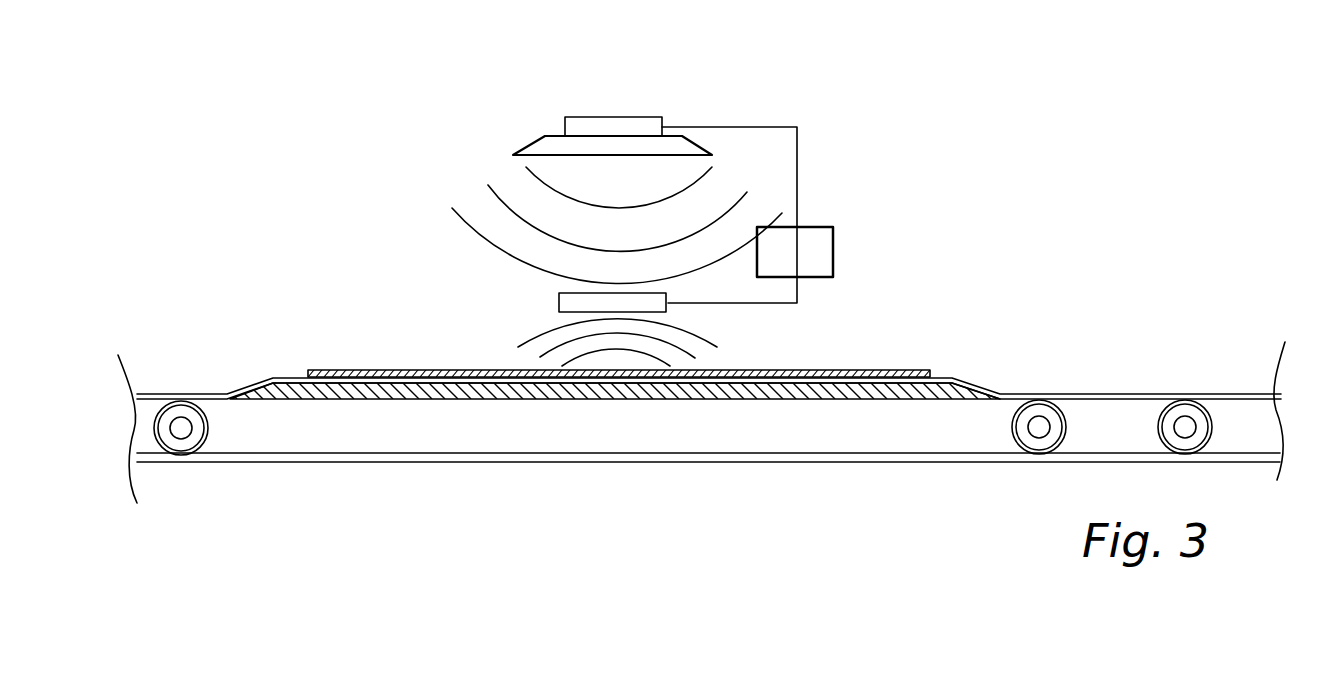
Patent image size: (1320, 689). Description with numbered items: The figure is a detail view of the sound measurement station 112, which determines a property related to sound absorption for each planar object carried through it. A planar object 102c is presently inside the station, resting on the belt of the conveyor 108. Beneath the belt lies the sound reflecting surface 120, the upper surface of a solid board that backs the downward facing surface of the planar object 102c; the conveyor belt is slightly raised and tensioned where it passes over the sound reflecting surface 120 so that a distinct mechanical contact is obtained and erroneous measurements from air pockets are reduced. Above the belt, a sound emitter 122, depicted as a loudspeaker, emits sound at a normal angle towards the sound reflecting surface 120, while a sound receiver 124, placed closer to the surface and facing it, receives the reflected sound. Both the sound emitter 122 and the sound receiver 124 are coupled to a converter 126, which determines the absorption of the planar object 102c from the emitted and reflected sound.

The planar object 102c is at (882, 368).
The conveyor 108 is at (1020, 393).
The sound measurement station 112 is at (872, 85).
The sound reflecting surface 120 is at (285, 390).
The sound emitter 122 is at (625, 117).
The sound receiver 124 is at (559, 302).
The converter 126 is at (833, 248).